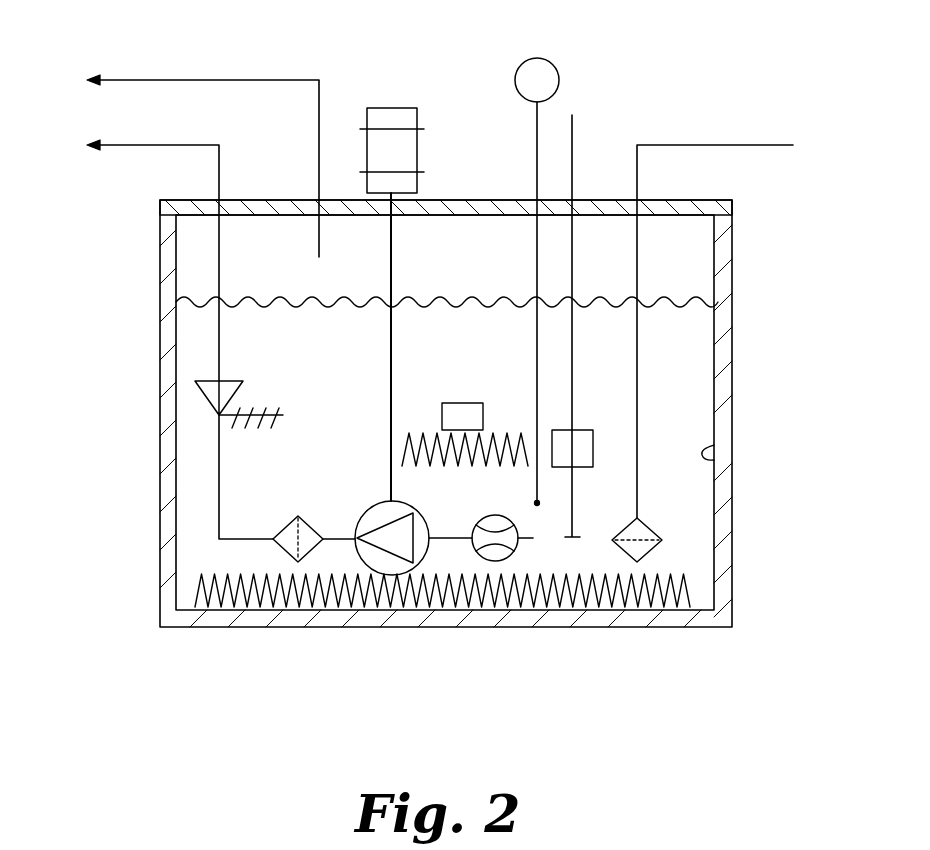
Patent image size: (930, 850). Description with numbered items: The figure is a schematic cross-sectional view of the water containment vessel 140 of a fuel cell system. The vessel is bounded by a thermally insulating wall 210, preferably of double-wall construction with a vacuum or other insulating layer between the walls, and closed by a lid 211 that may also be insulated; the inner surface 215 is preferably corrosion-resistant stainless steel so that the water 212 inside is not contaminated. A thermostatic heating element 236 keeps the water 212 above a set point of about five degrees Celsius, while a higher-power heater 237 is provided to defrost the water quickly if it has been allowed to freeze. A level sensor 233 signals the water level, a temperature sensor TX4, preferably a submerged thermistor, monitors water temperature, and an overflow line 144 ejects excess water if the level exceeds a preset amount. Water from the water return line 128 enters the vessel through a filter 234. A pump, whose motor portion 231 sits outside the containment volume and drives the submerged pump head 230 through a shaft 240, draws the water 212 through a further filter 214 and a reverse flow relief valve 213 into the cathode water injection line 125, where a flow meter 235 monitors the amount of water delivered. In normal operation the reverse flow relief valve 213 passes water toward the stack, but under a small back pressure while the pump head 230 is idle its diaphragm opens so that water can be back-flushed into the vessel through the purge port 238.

The water containment vessel 140 is at (126, 238).
The overflow line 144 is at (225, 80).
The cathode water injection line 125 is at (185, 145).
The water return line 128 is at (725, 145).
The thermally insulating wall 210 is at (732, 365).
The lid 211 is at (695, 208).
The water 212 is at (468, 334).
The reverse flow relief valve 213 is at (227, 386).
The further filter 214 is at (290, 522).
The inner surface 215 is at (714, 460).
The pump head 230 is at (373, 508).
The motor portion 231 is at (393, 108).
The level sensor 233 is at (585, 437).
The filter 234 is at (647, 527).
The flow meter 235 is at (485, 518).
The thermostatic heating element 236 is at (510, 437).
The heater 237 is at (682, 578).
The purge port 238 is at (263, 410).
The shaft 240 is at (388, 400).
The temperature sensor TX4 is at (552, 67).